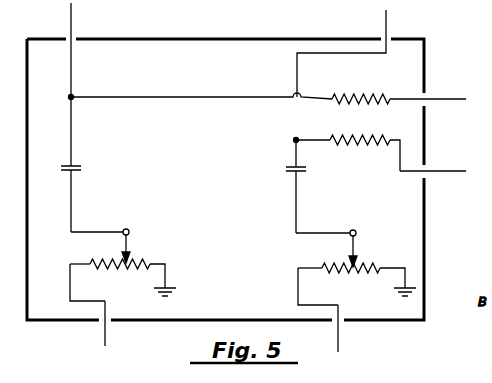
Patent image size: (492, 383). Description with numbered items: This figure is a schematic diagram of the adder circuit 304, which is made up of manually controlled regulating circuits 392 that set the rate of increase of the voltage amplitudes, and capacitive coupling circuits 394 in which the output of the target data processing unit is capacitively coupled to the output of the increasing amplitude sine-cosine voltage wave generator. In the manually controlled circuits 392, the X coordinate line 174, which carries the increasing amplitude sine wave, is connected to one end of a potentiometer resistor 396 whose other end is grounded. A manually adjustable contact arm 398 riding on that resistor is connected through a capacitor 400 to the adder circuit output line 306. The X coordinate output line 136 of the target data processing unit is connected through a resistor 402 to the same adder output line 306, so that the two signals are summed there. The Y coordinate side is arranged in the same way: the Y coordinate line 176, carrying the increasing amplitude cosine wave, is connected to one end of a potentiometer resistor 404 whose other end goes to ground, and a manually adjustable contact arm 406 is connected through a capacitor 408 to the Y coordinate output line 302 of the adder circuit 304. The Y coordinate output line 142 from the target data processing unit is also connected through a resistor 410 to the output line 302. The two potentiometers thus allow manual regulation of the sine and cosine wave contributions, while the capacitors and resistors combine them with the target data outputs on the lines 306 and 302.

The X coordinate output line 136 is at (436, 100).
The Y coordinate output line 142 is at (452, 177).
The X coordinate line 174 is at (107, 337).
The Y coordinate line 176 is at (340, 344).
The Y coordinate output line 302 is at (388, 28).
The adder circuit 304 is at (383, 321).
The adder circuit output line 306 is at (73, 26).
The manually controlled regulating circuits 392 is at (90, 258).
The capacitive coupling circuits 394 is at (344, 187).
The potentiometer resistor 396 is at (99, 268).
The manually adjustable contact arm 398 is at (132, 237).
The capacitor 400 is at (77, 172).
The resistor 402 is at (341, 104).
The potentiometer resistor 404 is at (330, 272).
The manually adjustable contact arm 406 is at (359, 245).
The capacitor 408 is at (289, 172).
The resistor 410 is at (338, 145).